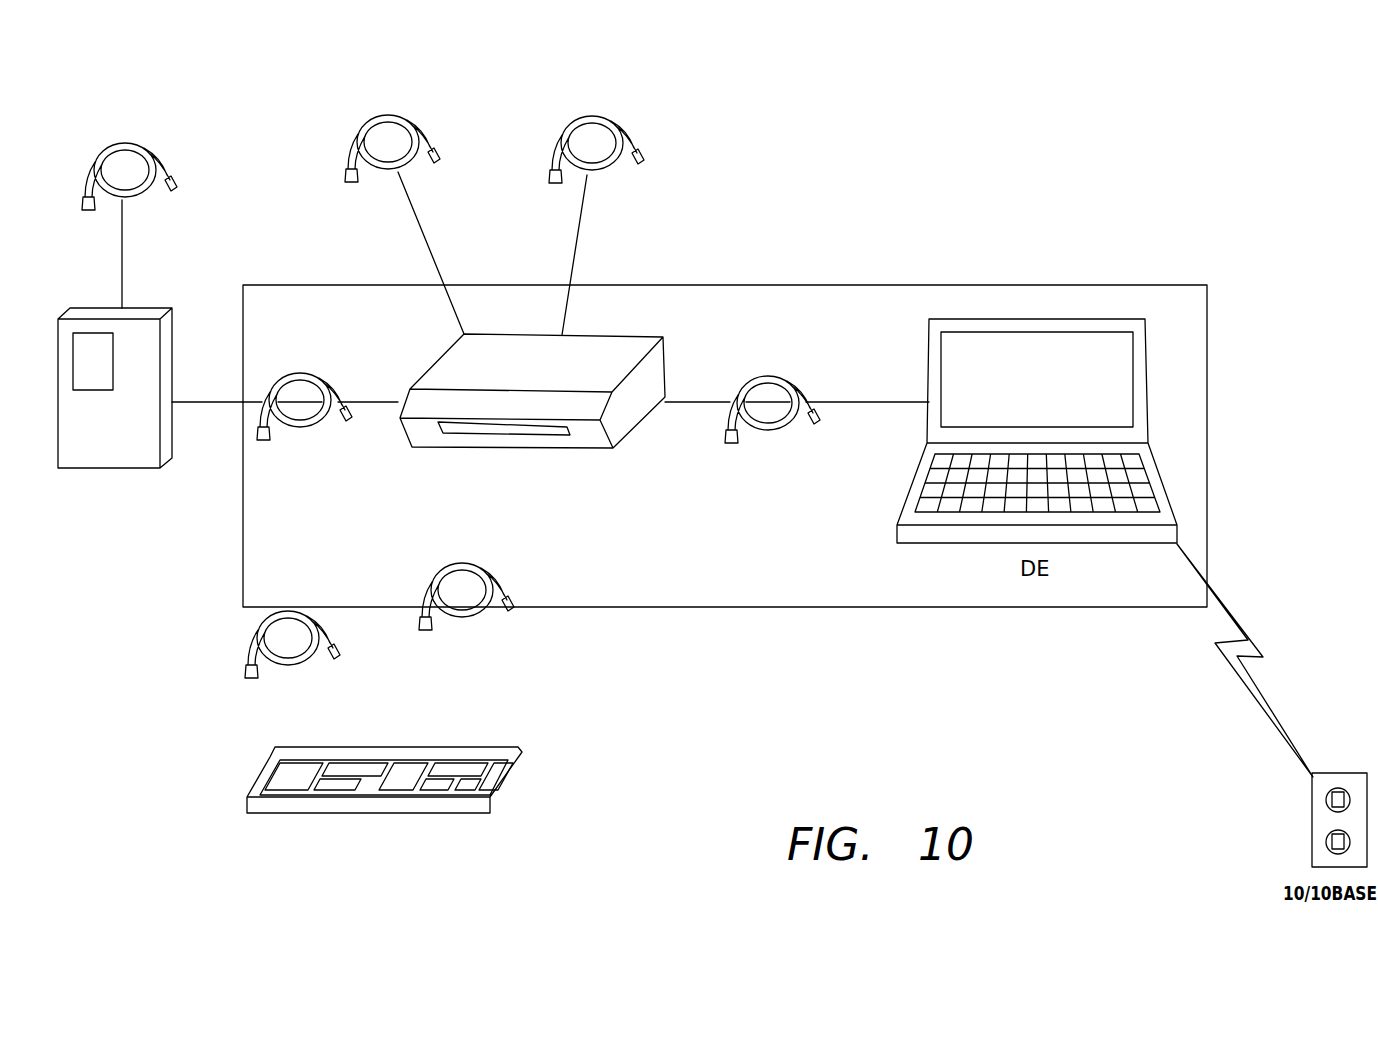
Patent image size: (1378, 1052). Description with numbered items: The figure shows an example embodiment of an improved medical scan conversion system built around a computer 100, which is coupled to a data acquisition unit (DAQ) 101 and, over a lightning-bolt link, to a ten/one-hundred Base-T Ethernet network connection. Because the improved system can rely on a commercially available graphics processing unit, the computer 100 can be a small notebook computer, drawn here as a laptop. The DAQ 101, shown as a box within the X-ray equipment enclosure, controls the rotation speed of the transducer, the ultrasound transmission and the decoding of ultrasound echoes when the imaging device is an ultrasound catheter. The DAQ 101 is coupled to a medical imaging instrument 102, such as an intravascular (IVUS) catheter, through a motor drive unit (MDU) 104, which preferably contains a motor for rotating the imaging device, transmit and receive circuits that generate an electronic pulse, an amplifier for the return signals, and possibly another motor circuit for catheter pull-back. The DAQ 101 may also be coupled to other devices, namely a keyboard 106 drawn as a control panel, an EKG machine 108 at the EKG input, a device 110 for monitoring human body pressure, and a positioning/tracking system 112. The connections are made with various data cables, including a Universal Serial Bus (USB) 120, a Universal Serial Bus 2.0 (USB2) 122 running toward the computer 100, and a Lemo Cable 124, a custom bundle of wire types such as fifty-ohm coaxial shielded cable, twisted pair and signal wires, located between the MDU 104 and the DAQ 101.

The computer 100 is at (1145, 380).
The data acquisition unit (DAQ) 101 is at (504, 335).
The medical imaging instrument 102 is at (163, 170).
The motor drive unit (MDU) 104 is at (148, 308).
The keyboard 106 is at (413, 746).
The EKG machine 108 is at (248, 636).
The device for monitoring human body pressure 110 is at (637, 137).
The positioning/tracking system 112 is at (427, 134).
The Universal Serial Bus (USB) 120 is at (500, 585).
The Universal Serial Bus 2.0 (USB2) 122 is at (768, 374).
The Lemo Cable 124 is at (298, 370).